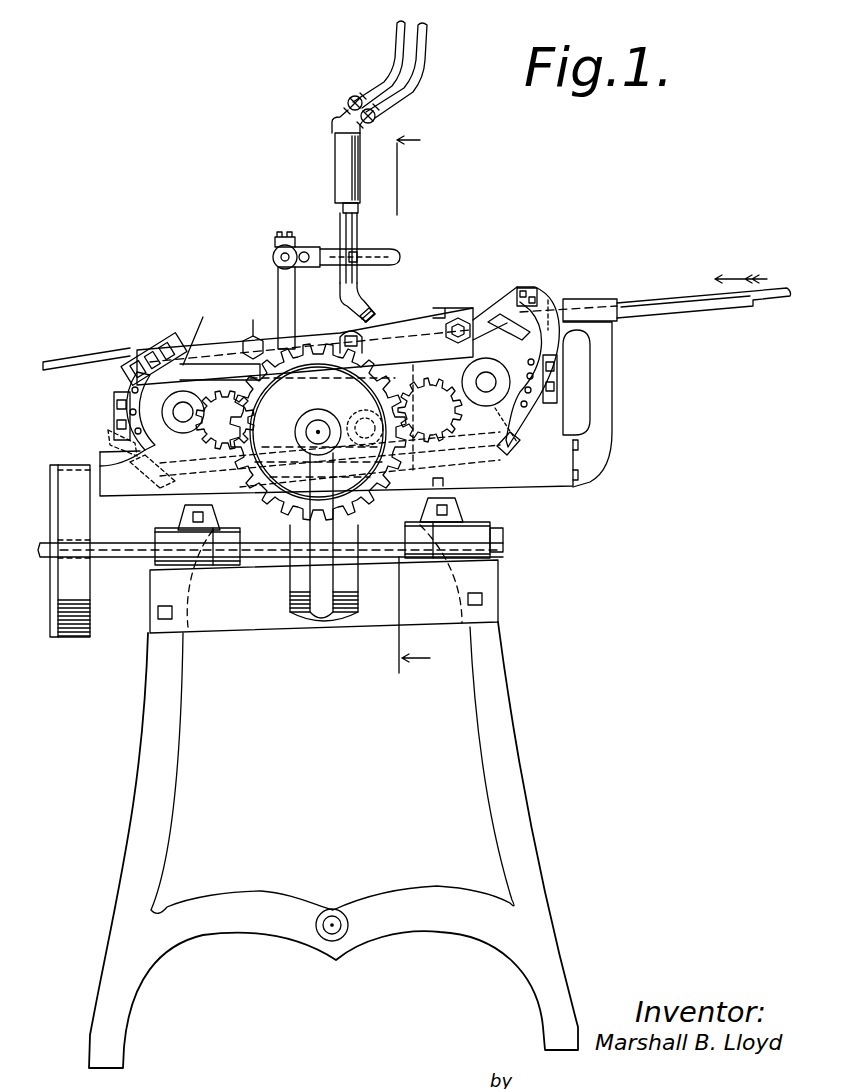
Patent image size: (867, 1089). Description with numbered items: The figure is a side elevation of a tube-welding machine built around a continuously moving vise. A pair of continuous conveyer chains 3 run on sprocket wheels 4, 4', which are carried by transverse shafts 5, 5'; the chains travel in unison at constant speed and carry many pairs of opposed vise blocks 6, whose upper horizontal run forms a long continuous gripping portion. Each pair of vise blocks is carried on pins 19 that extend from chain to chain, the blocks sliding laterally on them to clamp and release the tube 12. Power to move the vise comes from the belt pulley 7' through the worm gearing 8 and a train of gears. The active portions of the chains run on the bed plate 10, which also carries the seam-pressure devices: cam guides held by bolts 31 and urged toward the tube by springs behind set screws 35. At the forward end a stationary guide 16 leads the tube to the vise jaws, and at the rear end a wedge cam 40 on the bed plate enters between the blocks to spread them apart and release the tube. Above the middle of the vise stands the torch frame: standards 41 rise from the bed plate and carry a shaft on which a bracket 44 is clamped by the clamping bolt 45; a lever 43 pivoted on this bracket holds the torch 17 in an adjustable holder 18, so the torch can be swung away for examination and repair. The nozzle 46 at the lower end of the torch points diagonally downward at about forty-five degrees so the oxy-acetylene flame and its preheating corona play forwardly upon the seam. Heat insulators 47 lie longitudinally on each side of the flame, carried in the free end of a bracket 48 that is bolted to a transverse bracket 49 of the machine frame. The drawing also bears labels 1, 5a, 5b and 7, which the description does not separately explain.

The frame 1 is at (483, 725).
The conveyer chain 3 is at (410, 407).
The sprocket wheel 4 is at (143, 394).
The sprocket wheel 4' is at (516, 362).
The transverse shaft 5 is at (211, 406).
The transverse shaft 5' is at (551, 380).
The main gear 5a is at (318, 432).
The small gear 5b is at (430, 417).
The vise block 6 is at (160, 348).
The clamp block 7 is at (358, 394).
The belt pulley 7' is at (83, 551).
The worm gearing 8 is at (356, 563).
The bed plate 10 is at (552, 503).
The tube 12 is at (77, 362).
The stationary guide 16 is at (593, 306).
The torch 17 is at (365, 300).
The adjustable holder 18 is at (357, 254).
The pin 19 is at (113, 415).
The bolt 31 is at (567, 407).
The set screw 35 is at (250, 340).
The wedge cam 40 is at (197, 329).
The standard 41 is at (282, 302).
The lever 43 is at (403, 285).
The bracket 44 is at (307, 252).
The clamping bolt 45 is at (277, 244).
The nozzle 46 is at (374, 320).
The heat insulator 47 is at (457, 317).
The bracket 48 is at (518, 288).
The transverse bracket 49 is at (549, 330).